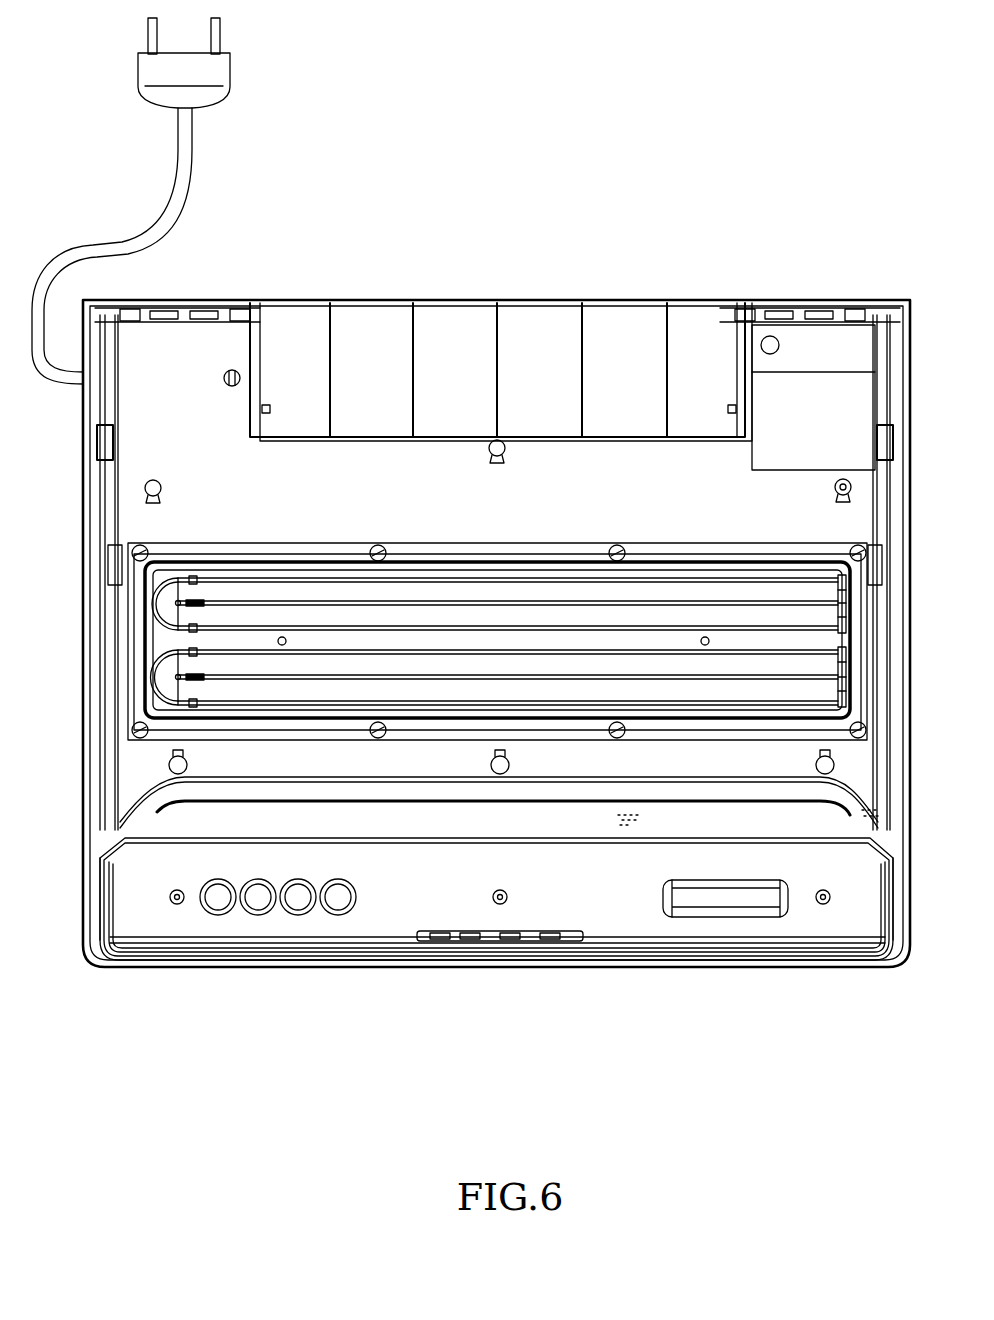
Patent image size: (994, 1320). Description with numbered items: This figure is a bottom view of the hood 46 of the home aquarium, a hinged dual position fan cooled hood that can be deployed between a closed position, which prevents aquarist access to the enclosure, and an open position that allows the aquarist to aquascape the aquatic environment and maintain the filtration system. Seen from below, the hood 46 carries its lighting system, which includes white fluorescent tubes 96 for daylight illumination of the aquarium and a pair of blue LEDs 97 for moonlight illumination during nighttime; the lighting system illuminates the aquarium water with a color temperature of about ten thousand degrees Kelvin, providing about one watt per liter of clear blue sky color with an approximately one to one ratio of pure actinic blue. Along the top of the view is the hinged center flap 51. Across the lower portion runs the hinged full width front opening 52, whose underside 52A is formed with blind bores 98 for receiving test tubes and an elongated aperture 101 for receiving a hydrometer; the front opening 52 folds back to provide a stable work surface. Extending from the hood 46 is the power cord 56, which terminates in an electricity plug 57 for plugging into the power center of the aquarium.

The hood 46 is at (190, 1048).
The hinged center flap 51 is at (633, 358).
The hinged full width front opening 52 is at (150, 913).
The underside 52A is at (748, 927).
The power cord 56 is at (177, 205).
The electricity plug 57 is at (213, 70).
The white fluorescent tubes 96 is at (570, 640).
The blue LEDs 97 is at (283, 636).
The blind bores 98 is at (338, 900).
The elongated aperture 101 is at (687, 895).